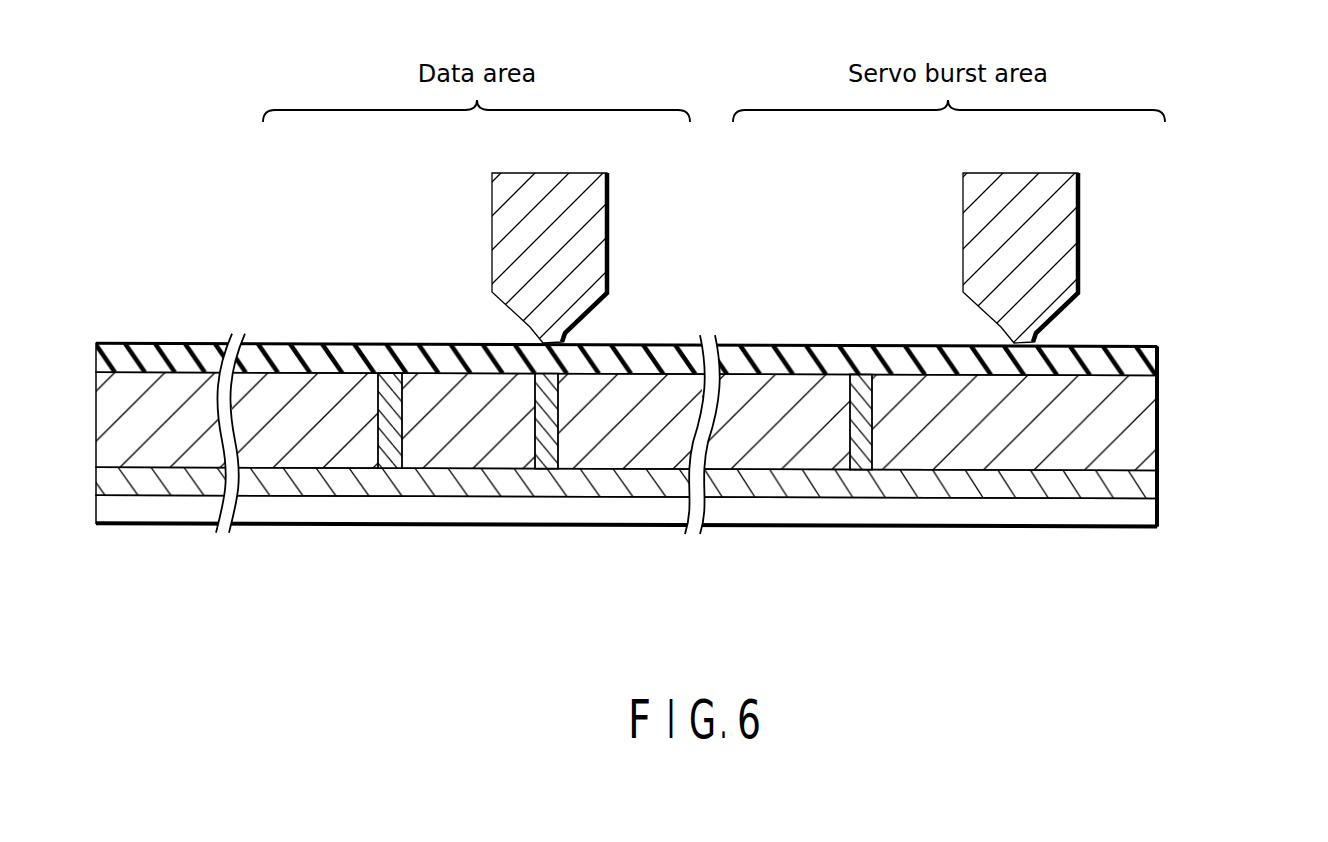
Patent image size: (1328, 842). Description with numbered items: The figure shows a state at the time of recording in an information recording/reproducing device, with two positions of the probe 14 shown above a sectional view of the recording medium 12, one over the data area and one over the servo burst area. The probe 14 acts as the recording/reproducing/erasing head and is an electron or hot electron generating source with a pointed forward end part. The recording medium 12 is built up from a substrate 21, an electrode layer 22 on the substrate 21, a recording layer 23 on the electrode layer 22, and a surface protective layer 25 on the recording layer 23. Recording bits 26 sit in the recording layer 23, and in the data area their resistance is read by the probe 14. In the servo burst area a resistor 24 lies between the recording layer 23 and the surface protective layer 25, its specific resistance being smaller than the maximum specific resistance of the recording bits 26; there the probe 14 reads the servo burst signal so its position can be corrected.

The recording medium 12 is at (705, 425).
The probe 14 is at (590, 223).
The substrate 21 is at (1145, 516).
The electrode layer 22 is at (1148, 485).
The recording layer 23 is at (1145, 424).
The resistor 24 is at (1150, 351).
The surface protective layer 25 is at (309, 349).
The recording bits 26 is at (390, 401).